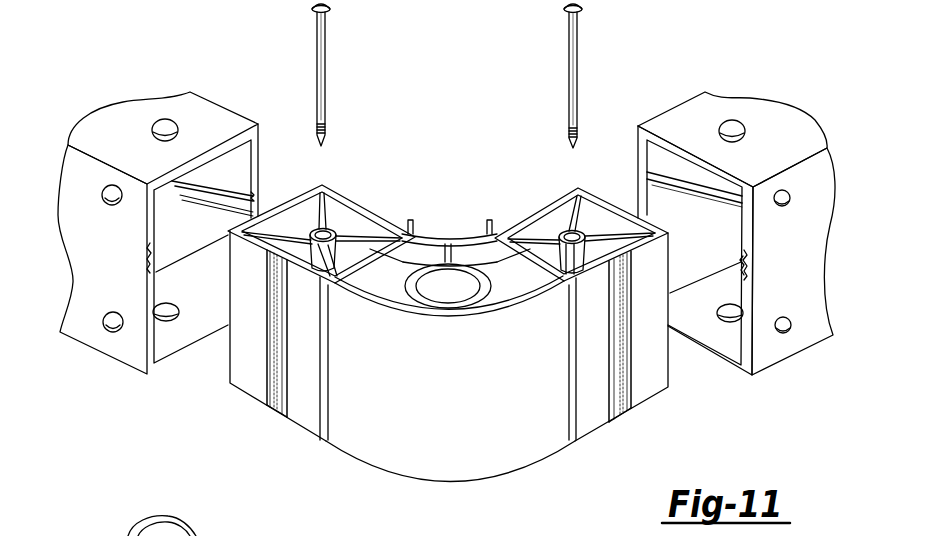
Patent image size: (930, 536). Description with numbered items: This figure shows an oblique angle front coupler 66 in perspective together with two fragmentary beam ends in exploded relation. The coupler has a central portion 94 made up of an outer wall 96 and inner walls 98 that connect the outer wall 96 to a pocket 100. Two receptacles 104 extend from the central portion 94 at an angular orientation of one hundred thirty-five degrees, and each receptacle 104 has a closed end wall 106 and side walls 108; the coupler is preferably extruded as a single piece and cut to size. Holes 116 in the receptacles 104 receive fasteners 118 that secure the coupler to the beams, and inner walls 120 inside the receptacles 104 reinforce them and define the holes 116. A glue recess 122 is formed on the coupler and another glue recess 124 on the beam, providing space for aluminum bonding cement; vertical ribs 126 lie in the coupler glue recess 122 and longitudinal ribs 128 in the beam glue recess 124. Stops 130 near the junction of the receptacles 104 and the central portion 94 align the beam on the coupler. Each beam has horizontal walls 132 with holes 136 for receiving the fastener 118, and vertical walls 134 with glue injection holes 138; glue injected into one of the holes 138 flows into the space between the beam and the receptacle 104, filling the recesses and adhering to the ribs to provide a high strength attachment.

The front coupler 66 is at (431, 489).
The central portion 94 is at (456, 403).
The outer wall 96 is at (510, 304).
The inner walls 98 is at (385, 270).
The pocket 100 is at (450, 290).
The receptacles 104 is at (312, 418).
The closed end walls 106 is at (300, 197).
The side walls 108 is at (648, 300).
The holes 116 is at (330, 228).
The fasteners 118 is at (327, 132).
The inner walls 120 is at (570, 162).
The glue recess 122 is at (265, 373).
The glue recess 124 is at (228, 210).
The vertical ribs 126 is at (280, 393).
The longitudinal ribs 128 is at (200, 191).
The stops 130 is at (425, 230).
The horizontal walls 132 is at (690, 125).
The vertical walls 134 is at (680, 182).
The holes 136 is at (737, 121).
The glue injection holes 138 is at (791, 198).